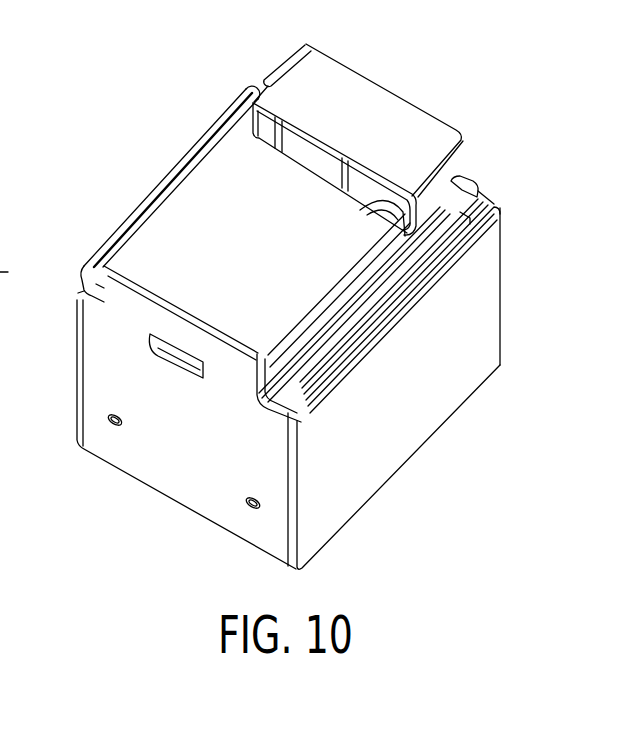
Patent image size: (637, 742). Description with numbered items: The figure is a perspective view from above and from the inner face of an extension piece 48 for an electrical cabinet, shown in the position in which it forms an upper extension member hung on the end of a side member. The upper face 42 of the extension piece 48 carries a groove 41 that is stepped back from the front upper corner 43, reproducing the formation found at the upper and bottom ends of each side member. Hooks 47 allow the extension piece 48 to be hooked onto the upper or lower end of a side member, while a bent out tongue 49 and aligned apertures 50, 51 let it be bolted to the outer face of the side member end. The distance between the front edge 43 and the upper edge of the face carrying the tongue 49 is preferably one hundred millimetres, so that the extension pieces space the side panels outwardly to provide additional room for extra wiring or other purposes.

The groove 41 is at (358, 212).
The upper face 42 is at (233, 167).
The front upper corner 43 is at (380, 90).
The hooks 47 is at (468, 170).
The extension piece 48 is at (143, 168).
The bent out tongue 49 is at (180, 380).
The aperture 50 is at (114, 427).
The aperture 51 is at (249, 507).